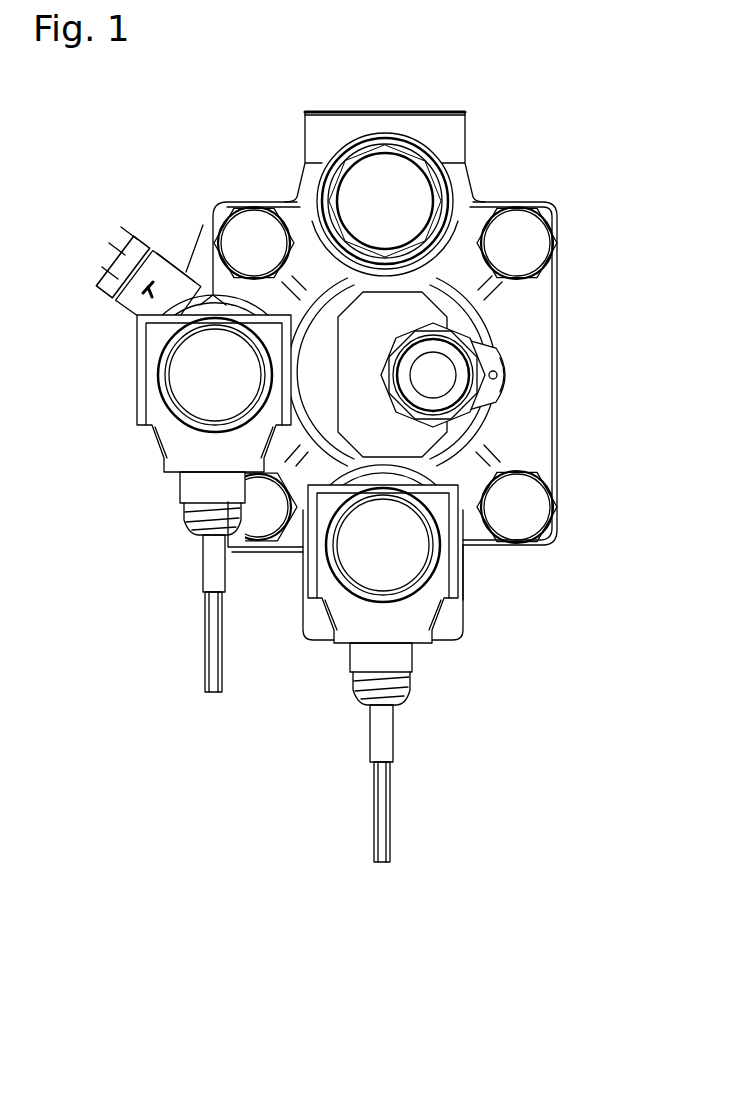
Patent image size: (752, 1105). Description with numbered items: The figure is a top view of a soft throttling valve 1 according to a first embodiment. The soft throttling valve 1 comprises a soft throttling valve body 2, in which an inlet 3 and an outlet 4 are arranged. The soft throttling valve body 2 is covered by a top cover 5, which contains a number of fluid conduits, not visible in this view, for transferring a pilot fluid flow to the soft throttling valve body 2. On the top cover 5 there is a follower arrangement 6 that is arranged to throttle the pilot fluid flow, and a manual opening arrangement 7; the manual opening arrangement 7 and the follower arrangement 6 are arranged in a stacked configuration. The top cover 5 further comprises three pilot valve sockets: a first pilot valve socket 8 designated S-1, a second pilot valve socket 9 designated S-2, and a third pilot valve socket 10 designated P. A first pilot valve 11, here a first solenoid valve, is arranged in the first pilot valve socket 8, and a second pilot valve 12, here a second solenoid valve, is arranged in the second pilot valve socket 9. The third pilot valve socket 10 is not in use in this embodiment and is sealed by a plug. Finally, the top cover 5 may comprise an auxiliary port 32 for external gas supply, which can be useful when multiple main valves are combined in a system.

The soft throttling valve 1 is at (108, 139).
The soft throttling valve body 2 is at (318, 137).
The inlet 3 is at (445, 640).
The outlet 4 is at (400, 112).
The top cover 5 is at (523, 323).
The follower arrangement 6 is at (493, 393).
The manual opening arrangement 7 is at (443, 402).
The first pilot valve socket 8 is at (197, 282).
The second pilot valve socket 9 is at (473, 582).
The third pilot valve socket 10 is at (447, 182).
The first pilot valve 11 is at (172, 432).
The second pilot valve 12 is at (348, 627).
The auxiliary port 32 is at (122, 250).